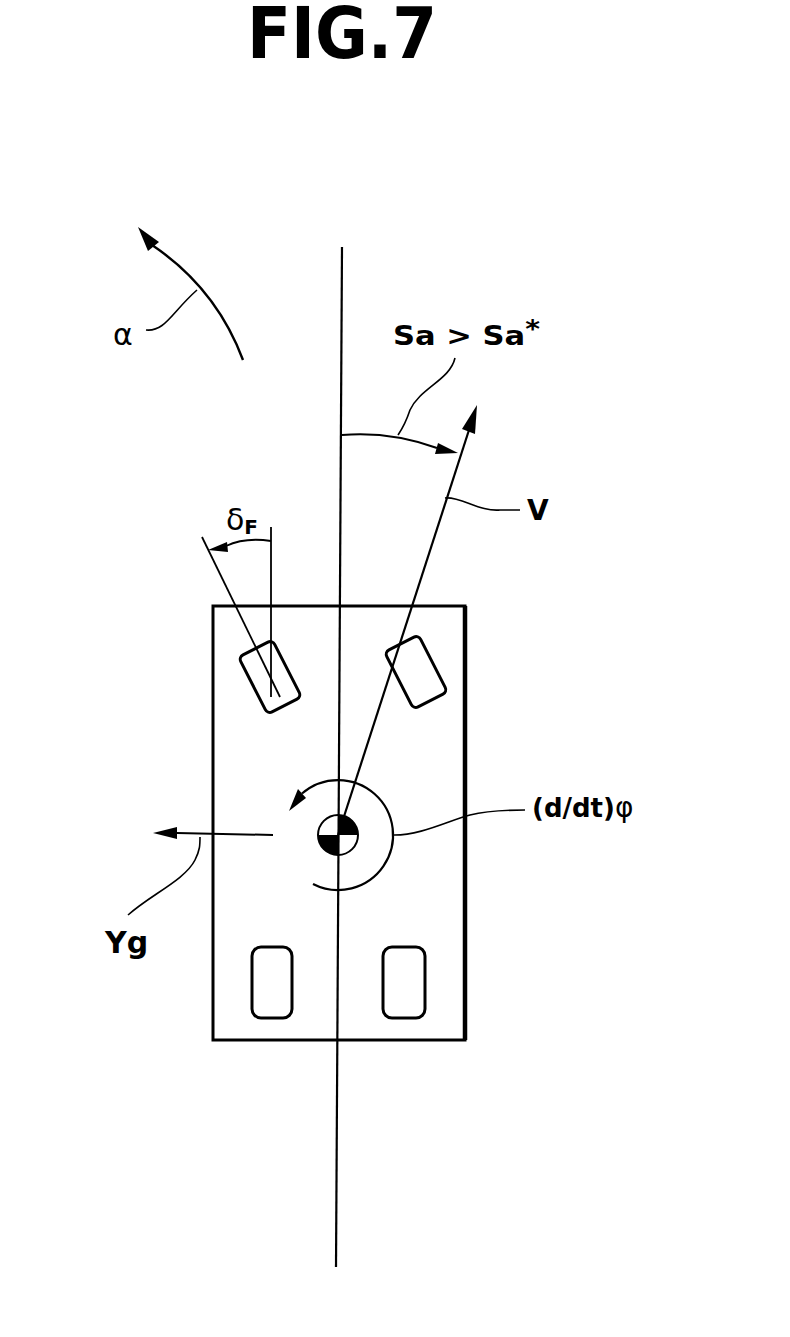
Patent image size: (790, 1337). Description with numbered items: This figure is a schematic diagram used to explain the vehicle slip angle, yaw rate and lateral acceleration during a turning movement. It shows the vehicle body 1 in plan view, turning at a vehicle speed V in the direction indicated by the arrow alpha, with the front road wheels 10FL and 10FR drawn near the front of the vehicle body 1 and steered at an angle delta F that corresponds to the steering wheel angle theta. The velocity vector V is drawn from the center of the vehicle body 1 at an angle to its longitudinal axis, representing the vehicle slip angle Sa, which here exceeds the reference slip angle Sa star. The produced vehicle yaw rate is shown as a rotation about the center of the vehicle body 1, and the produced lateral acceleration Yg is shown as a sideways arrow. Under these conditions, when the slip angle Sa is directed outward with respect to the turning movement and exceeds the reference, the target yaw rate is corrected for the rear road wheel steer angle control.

The vehicle body 1 is at (465, 950).
The front road wheel 10FL is at (253, 675).
The front road wheel 10FR is at (432, 685).